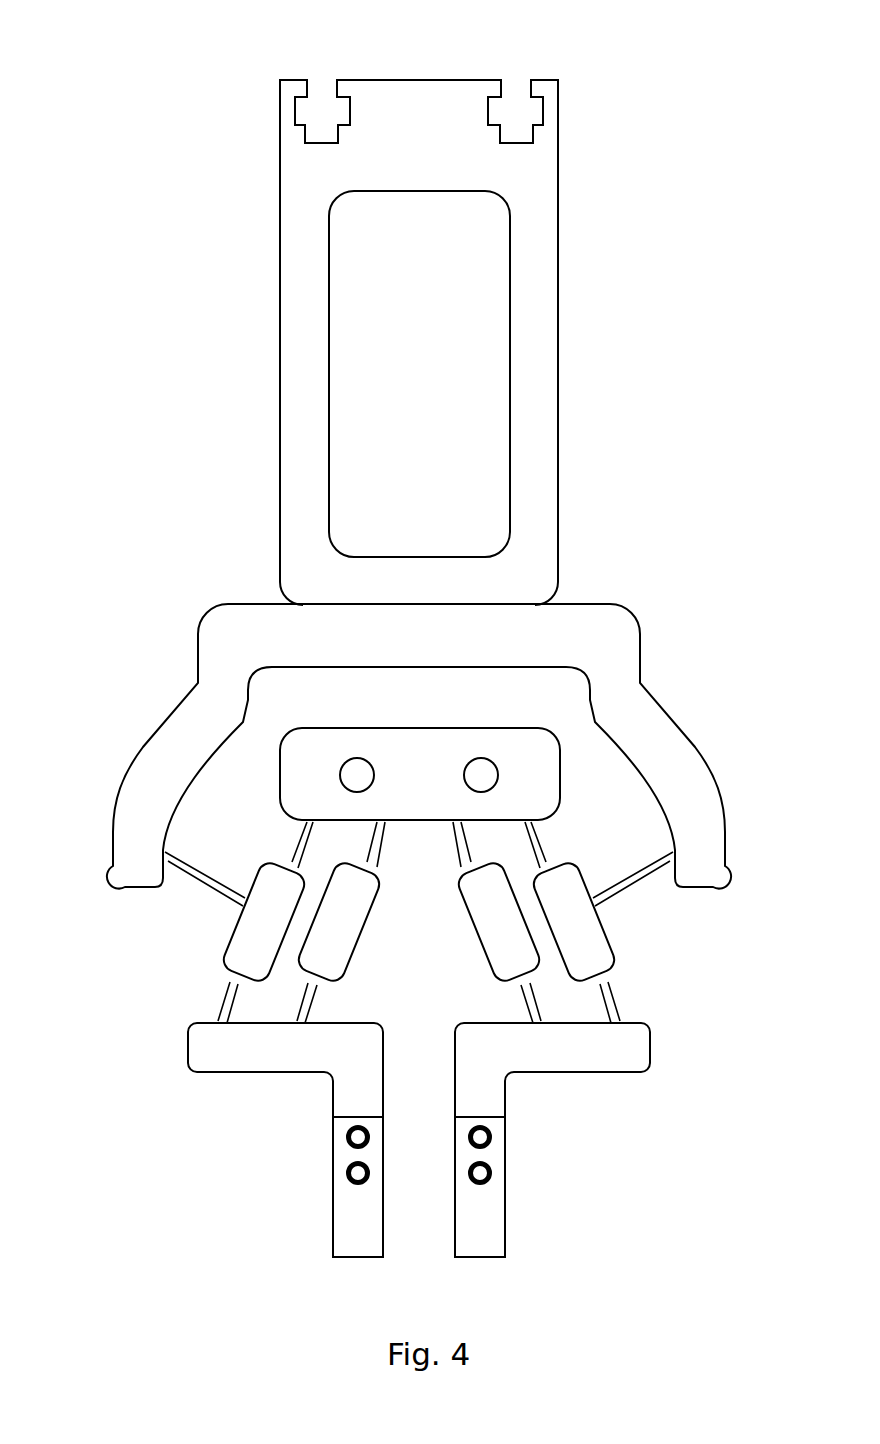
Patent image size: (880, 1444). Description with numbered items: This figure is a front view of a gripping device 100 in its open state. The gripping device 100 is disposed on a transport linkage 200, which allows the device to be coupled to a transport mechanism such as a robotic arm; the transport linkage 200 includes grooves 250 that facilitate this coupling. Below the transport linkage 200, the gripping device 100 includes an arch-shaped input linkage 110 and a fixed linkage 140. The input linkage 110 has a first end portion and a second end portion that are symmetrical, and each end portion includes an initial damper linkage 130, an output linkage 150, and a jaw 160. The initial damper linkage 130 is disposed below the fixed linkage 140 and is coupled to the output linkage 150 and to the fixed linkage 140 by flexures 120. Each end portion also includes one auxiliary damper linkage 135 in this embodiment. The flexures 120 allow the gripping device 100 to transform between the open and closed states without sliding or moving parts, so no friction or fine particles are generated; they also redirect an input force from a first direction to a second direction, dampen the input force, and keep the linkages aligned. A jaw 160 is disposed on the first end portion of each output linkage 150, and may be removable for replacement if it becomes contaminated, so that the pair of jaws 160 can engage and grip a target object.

The gripping device 100 is at (122, 650).
The input linkage 110 is at (602, 603).
The flexures 120 is at (622, 881).
The initial damper linkage 130 is at (222, 960).
The auxiliary damper linkage 135 is at (492, 968).
The fixed linkage 140 is at (423, 822).
The output linkage 150 is at (188, 1063).
The jaw 160 is at (455, 1237).
The transport linkage 200 is at (452, 80).
The grooves 250 is at (533, 96).